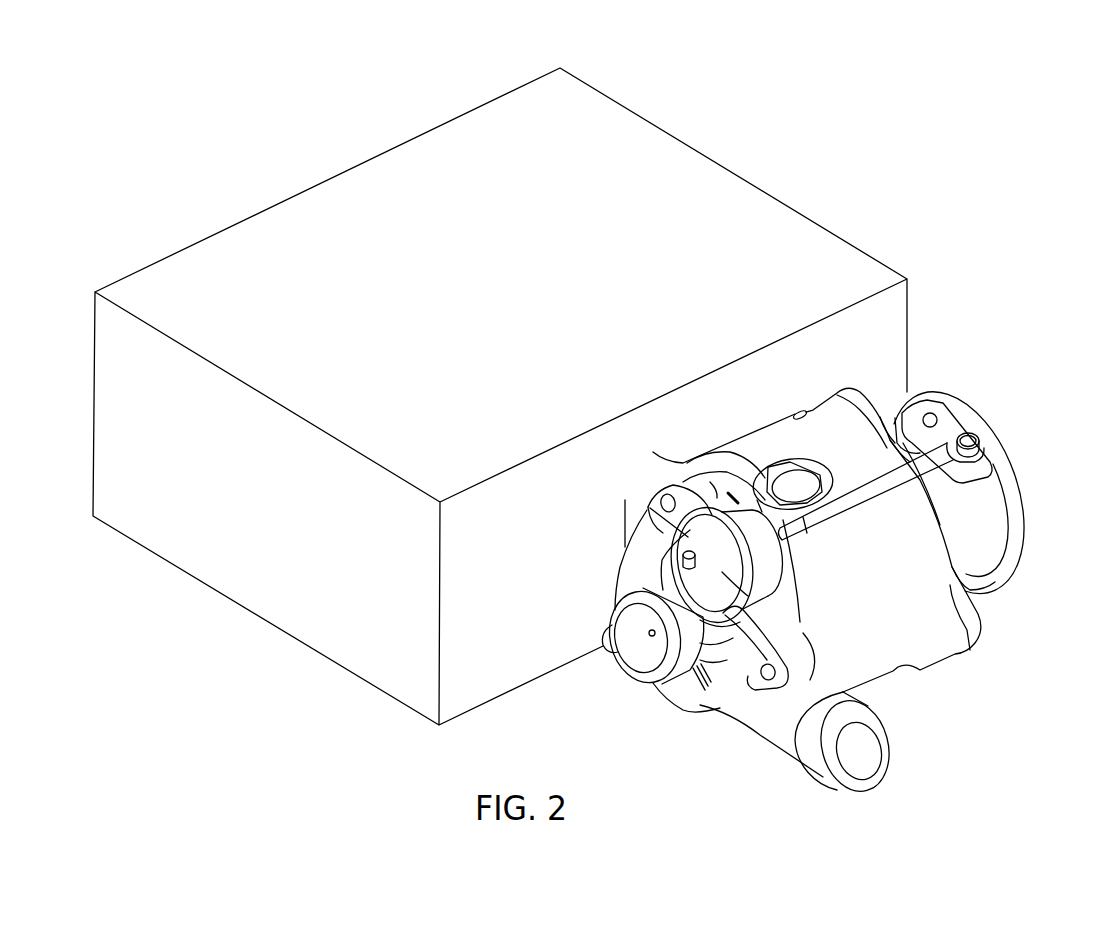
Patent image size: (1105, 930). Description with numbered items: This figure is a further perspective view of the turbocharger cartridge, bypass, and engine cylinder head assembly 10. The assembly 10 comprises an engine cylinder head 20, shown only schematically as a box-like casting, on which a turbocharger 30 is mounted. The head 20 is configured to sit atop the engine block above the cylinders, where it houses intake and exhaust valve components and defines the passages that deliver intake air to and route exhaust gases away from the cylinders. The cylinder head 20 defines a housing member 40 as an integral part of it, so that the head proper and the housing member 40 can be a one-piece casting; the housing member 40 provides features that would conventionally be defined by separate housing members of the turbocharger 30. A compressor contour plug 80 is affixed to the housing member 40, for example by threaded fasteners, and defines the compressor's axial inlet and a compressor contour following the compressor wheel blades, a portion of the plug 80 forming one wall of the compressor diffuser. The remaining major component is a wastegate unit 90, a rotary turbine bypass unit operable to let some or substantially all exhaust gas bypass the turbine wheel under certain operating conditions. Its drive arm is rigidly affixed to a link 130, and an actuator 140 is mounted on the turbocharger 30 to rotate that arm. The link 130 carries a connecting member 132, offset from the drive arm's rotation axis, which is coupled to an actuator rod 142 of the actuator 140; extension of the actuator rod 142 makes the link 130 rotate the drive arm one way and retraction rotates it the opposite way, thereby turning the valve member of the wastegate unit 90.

The turbocharger cartridge, bypass, and engine cylinder head assembly 10 is at (800, 180).
The engine cylinder head 20 is at (812, 242).
The turbocharger 30 is at (897, 678).
The housing member 40 is at (773, 435).
The compressor contour plug 80 is at (723, 642).
The wastegate unit 90 is at (985, 592).
The link 130 is at (978, 470).
The connecting member 132 is at (973, 440).
The actuator 140 is at (736, 595).
The actuator rod 142 is at (848, 505).